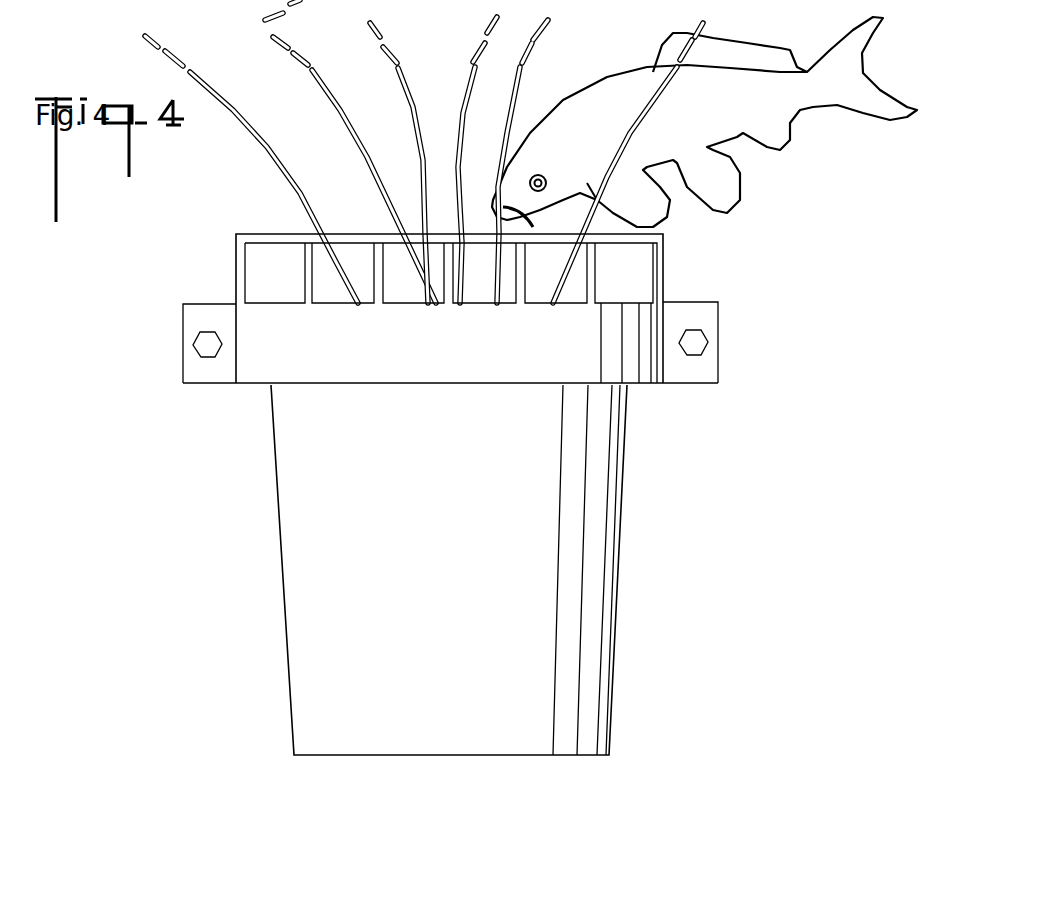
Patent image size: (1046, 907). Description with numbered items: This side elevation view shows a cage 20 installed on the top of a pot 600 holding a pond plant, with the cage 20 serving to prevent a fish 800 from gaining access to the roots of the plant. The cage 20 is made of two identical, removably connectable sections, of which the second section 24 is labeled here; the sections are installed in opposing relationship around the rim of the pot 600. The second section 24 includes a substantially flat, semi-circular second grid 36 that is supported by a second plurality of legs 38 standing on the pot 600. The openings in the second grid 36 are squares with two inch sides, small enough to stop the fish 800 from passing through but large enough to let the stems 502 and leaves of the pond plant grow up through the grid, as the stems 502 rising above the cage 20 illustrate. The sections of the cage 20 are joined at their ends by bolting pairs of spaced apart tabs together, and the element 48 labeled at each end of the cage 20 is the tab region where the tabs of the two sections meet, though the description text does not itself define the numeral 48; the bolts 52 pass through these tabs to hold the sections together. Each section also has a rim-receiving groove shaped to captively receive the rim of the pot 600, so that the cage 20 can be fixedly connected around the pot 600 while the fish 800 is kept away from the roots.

The cage 20 is at (446, 295).
The second section 24 is at (228, 227).
The second grid 36 is at (266, 233).
The second plurality of legs 38 is at (308, 290).
The mounting brackets 48 is at (193, 321).
The bolts 52 is at (203, 348).
The stems 502 is at (210, 84).
The pot 600 is at (618, 558).
The fish 800 is at (747, 93).